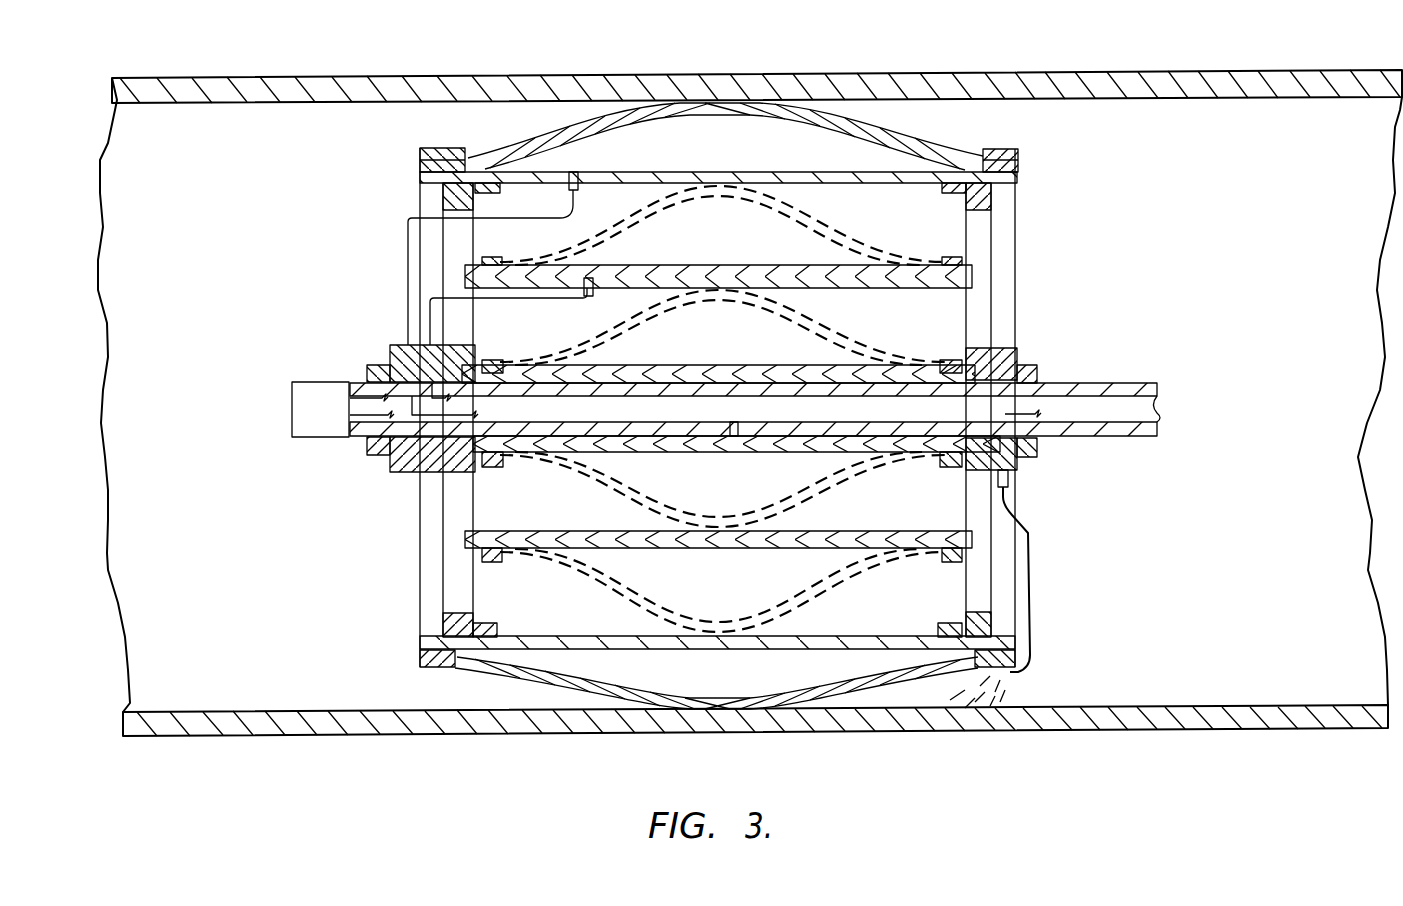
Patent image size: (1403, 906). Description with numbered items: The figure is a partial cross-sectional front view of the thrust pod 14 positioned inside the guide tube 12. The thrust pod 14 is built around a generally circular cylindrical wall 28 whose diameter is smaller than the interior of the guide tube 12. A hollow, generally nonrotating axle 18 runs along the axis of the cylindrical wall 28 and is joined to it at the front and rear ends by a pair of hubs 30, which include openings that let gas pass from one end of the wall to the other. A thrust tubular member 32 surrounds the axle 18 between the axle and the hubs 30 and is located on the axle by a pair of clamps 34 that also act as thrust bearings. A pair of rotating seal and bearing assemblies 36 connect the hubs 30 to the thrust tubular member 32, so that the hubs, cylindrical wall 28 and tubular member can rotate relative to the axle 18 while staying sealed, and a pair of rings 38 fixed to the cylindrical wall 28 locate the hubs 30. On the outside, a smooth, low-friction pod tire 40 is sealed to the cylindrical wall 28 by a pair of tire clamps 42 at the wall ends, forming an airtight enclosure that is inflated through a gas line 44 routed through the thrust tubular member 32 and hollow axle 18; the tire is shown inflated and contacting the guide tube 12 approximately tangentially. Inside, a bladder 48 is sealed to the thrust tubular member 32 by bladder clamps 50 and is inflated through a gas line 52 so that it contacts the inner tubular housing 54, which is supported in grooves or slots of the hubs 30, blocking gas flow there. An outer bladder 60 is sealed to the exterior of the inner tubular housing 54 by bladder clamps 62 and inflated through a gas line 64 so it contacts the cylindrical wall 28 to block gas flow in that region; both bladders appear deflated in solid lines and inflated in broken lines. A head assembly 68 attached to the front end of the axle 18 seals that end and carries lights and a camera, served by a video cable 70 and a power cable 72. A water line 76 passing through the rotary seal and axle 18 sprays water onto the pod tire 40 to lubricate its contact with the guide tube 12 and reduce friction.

The guide tube 12 is at (1343, 71).
The thrust pod 14 is at (1055, 198).
The axle 18 is at (1130, 438).
The cylindrical wall 28 is at (632, 172).
The hubs 30 is at (990, 212).
The thrust tubular member 32 is at (605, 456).
The clamps 34 is at (385, 350).
The rotating seal and bearing assemblies 36 is at (395, 475).
The rings 38 is at (497, 623).
The pod tire 40 is at (905, 136).
The tire clamps 42 is at (440, 148).
The gas line 44 is at (408, 228).
The bladder 48 is at (742, 365).
The bladder clamps 50 is at (496, 360).
The gas line 52 is at (740, 422).
The inner tubular housing 54 is at (858, 288).
The outer bladder 60 is at (805, 217).
The bladder clamps 62 is at (498, 257).
The gas line 64 is at (428, 312).
The head assembly 68 is at (282, 430).
The video cable 70 is at (360, 384).
The power cable 72 is at (355, 437).
The water line 76 is at (1032, 617).